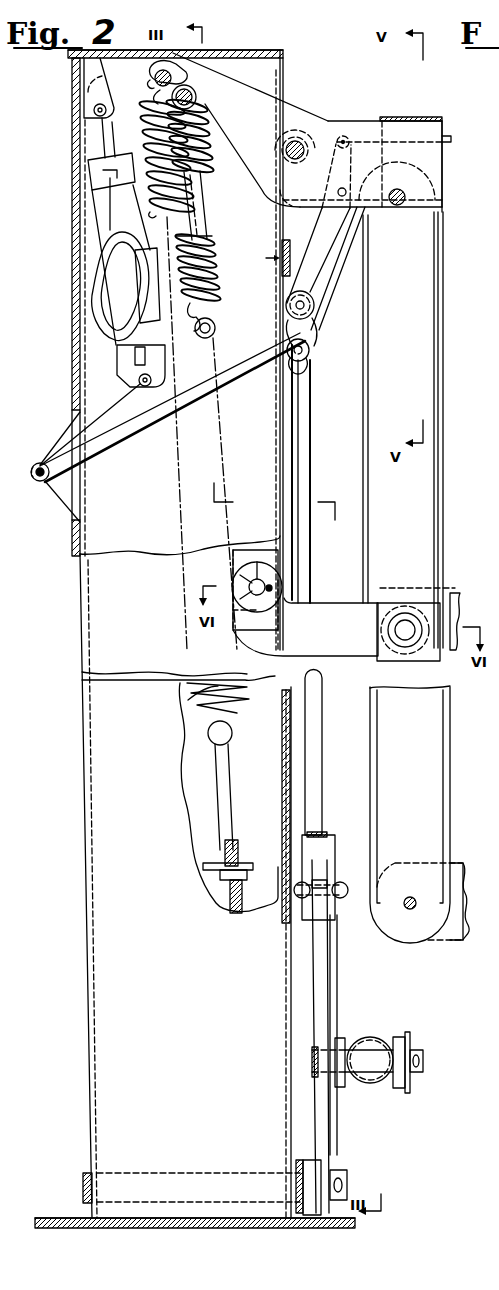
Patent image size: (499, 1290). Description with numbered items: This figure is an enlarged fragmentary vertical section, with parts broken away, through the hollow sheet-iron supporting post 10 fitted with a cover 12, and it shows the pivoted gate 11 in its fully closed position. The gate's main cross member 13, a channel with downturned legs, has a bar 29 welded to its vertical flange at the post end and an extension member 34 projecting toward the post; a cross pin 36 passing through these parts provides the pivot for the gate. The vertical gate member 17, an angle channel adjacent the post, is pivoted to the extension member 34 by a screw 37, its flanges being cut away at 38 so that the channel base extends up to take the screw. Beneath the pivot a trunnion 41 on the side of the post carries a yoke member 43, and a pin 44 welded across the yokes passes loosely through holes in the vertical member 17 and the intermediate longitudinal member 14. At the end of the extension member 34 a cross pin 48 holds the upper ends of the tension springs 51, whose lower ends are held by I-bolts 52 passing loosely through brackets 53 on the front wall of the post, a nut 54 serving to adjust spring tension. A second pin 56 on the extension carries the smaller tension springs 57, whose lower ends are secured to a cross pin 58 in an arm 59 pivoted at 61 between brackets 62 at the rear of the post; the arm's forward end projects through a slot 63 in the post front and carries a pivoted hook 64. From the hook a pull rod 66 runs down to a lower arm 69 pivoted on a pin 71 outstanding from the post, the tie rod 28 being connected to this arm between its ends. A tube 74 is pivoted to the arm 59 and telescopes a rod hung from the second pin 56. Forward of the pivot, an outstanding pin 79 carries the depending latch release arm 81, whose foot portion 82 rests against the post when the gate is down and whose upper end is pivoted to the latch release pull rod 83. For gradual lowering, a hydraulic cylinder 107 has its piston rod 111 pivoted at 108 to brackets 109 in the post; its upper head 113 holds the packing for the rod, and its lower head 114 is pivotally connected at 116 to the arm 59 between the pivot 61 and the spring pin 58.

The supporting post 10 is at (86, 900).
The gate 11 is at (420, 118).
The cover 12 is at (70, 64).
The main longitudinal cross member 13 is at (446, 120).
The intermediate longitudinal member 14 is at (454, 604).
The vertical member 17 is at (435, 526).
The tie rod 28 is at (368, 1033).
The bar 29 is at (270, 212).
The extension member 34 is at (292, 108).
The cross pin 36 is at (300, 146).
The screw 37 is at (398, 206).
The cut-away portion 38 is at (445, 212).
The trunnion 41 is at (256, 580).
The yoke member 43 is at (336, 612).
The pin 44 is at (402, 620).
The cross pin 48 is at (170, 74).
The tension spring 51 is at (140, 112).
The I-bolt 52 is at (222, 799).
The bracket 53 is at (262, 870).
The nut 54 is at (222, 878).
The second pin 56 is at (200, 97).
The smaller tension spring 57 is at (217, 288).
The cross pin 58 is at (215, 330).
The arm 59 is at (192, 386).
The pivot 61 is at (42, 468).
The bracket 62 is at (58, 490).
The slot 63 is at (282, 433).
The hook 64 is at (312, 305).
The pull rod 66 is at (307, 474).
The arm 69 is at (330, 974).
The pin 71 is at (345, 1180).
The tube 74 is at (200, 216).
The outstanding pin 79 is at (319, 223).
The latch release arm 81 is at (350, 246).
The foot portion 82 is at (292, 402).
The latch release pull rod 83 is at (452, 140).
The hydraulic cylinder 107 is at (98, 215).
The pivot 108 is at (94, 113).
The bracket 109 is at (92, 86).
The piston rod 111 is at (100, 140).
The upper head 113 is at (94, 176).
The lower head 114 is at (118, 355).
The pivot connection 116 is at (136, 380).